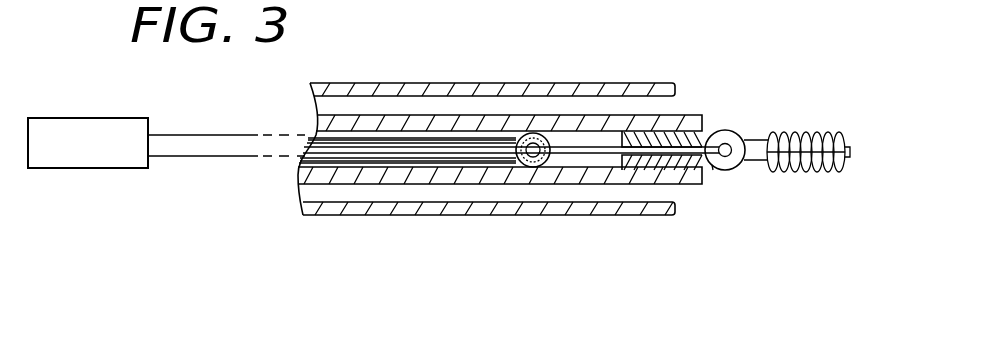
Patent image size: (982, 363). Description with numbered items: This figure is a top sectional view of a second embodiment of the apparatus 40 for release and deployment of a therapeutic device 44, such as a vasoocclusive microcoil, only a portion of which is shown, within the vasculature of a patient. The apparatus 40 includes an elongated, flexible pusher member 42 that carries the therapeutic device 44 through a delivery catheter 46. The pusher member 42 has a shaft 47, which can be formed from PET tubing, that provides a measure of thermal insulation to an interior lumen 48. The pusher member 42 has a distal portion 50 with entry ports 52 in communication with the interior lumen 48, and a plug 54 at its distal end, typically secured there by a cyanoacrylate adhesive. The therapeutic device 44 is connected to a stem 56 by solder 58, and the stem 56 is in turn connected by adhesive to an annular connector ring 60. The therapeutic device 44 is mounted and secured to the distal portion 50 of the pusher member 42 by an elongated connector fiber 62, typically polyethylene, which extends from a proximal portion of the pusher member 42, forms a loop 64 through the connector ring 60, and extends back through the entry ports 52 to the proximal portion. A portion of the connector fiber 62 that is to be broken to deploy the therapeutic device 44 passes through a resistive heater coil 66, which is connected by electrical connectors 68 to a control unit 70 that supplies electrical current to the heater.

The apparatus 40 is at (700, 96).
The pusher member 42 is at (659, 84).
The therapeutic device 44 is at (810, 173).
The delivery catheter 46 is at (548, 216).
The shaft 47 is at (318, 188).
The interior lumen 48 is at (598, 115).
The distal portion 50 is at (620, 186).
The entry ports 52 is at (533, 132).
The plug 54 is at (672, 168).
The stem 56 is at (752, 163).
The solder 58 is at (770, 133).
The connector ring 60 is at (727, 130).
The connector fiber 62 is at (478, 150).
The loop 64 is at (712, 170).
The resistive heater coil 66 is at (530, 168).
The electrical connectors 68 is at (416, 158).
The control unit 70 is at (88, 170).